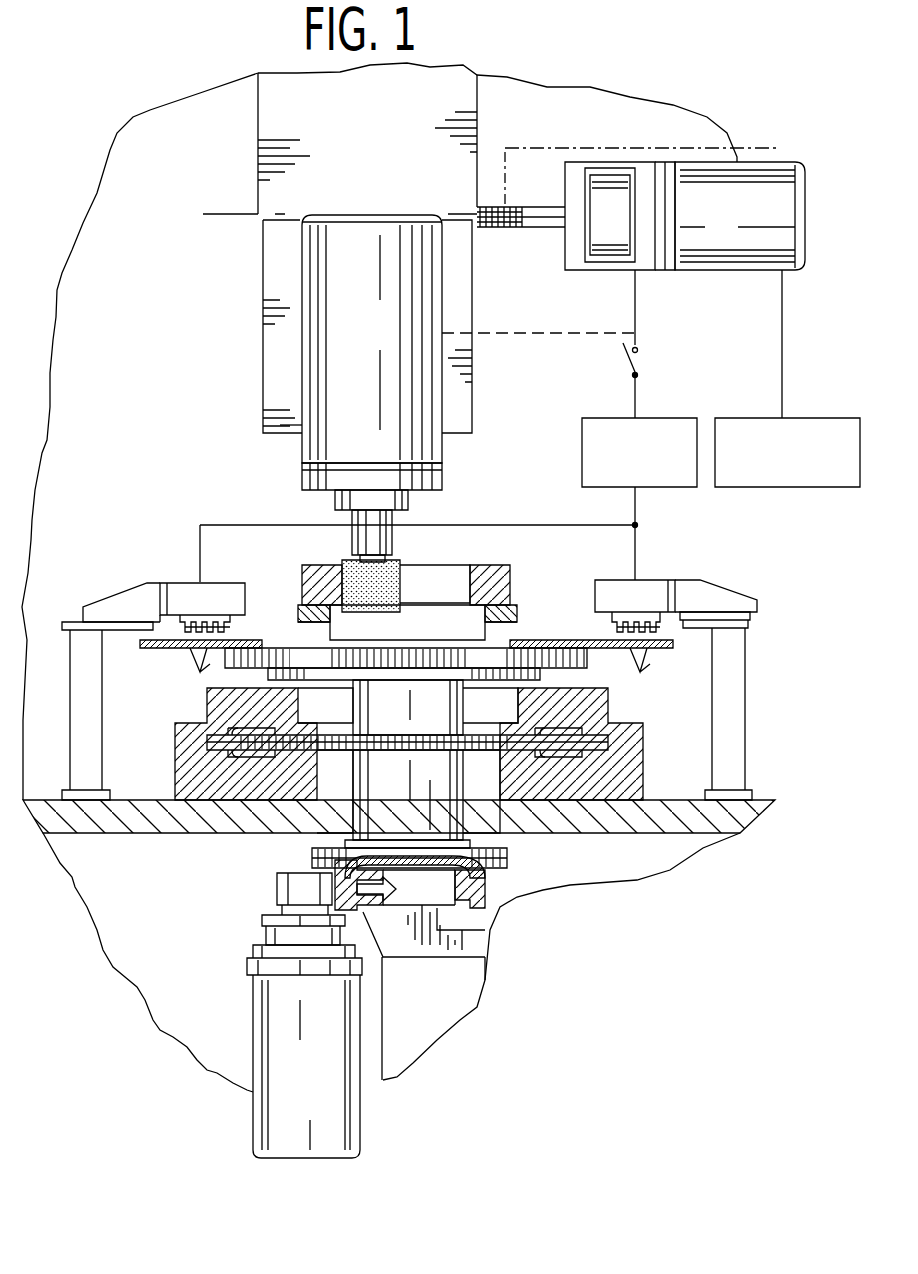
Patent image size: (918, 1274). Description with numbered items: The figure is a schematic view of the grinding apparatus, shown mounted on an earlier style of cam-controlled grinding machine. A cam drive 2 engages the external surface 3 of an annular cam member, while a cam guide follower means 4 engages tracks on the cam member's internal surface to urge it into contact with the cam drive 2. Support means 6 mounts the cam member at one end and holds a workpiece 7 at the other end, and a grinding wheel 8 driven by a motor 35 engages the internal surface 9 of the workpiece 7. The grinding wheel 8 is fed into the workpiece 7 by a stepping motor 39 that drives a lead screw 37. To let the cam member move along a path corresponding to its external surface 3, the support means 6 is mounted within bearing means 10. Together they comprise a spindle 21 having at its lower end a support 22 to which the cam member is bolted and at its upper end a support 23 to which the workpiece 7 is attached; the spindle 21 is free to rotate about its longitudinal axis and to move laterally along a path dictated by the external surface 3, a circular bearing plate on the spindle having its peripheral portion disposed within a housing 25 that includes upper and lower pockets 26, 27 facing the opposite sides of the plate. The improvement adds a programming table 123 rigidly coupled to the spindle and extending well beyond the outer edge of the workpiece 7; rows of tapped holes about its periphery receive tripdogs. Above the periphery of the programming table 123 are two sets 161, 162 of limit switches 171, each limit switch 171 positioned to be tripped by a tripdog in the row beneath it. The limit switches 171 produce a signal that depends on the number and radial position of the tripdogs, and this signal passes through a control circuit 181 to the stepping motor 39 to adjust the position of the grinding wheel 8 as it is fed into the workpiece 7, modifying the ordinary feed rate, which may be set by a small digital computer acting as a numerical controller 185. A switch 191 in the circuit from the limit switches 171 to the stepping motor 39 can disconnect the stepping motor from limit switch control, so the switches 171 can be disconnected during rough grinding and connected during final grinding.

The cam drive 2 is at (212, 205).
The external surface 3 is at (485, 885).
The cam guide follower means 4 is at (385, 889).
The support means 6 is at (343, 779).
The workpiece 7 is at (506, 575).
The grinding wheel 8 is at (399, 570).
The internal surface 9 is at (469, 572).
The bearing means 10 is at (645, 745).
The spindle 21 is at (352, 710).
The support 22 is at (507, 860).
The support 23 is at (585, 652).
The housing 25 is at (210, 706).
The upper pockets 26 is at (565, 728).
The lower pockets 27 is at (561, 755).
The motor 35 is at (385, 376).
The lead screw 37 is at (545, 180).
The stepping motor 39 is at (733, 227).
The programming table 123 is at (156, 650).
The first set of limit switches 161 is at (234, 632).
The second set of limit switches 162 is at (605, 630).
The limit switches 171 is at (420, 668).
The control circuit 181 is at (582, 434).
The numerical controller 185 is at (805, 418).
The switch 191 is at (625, 361).